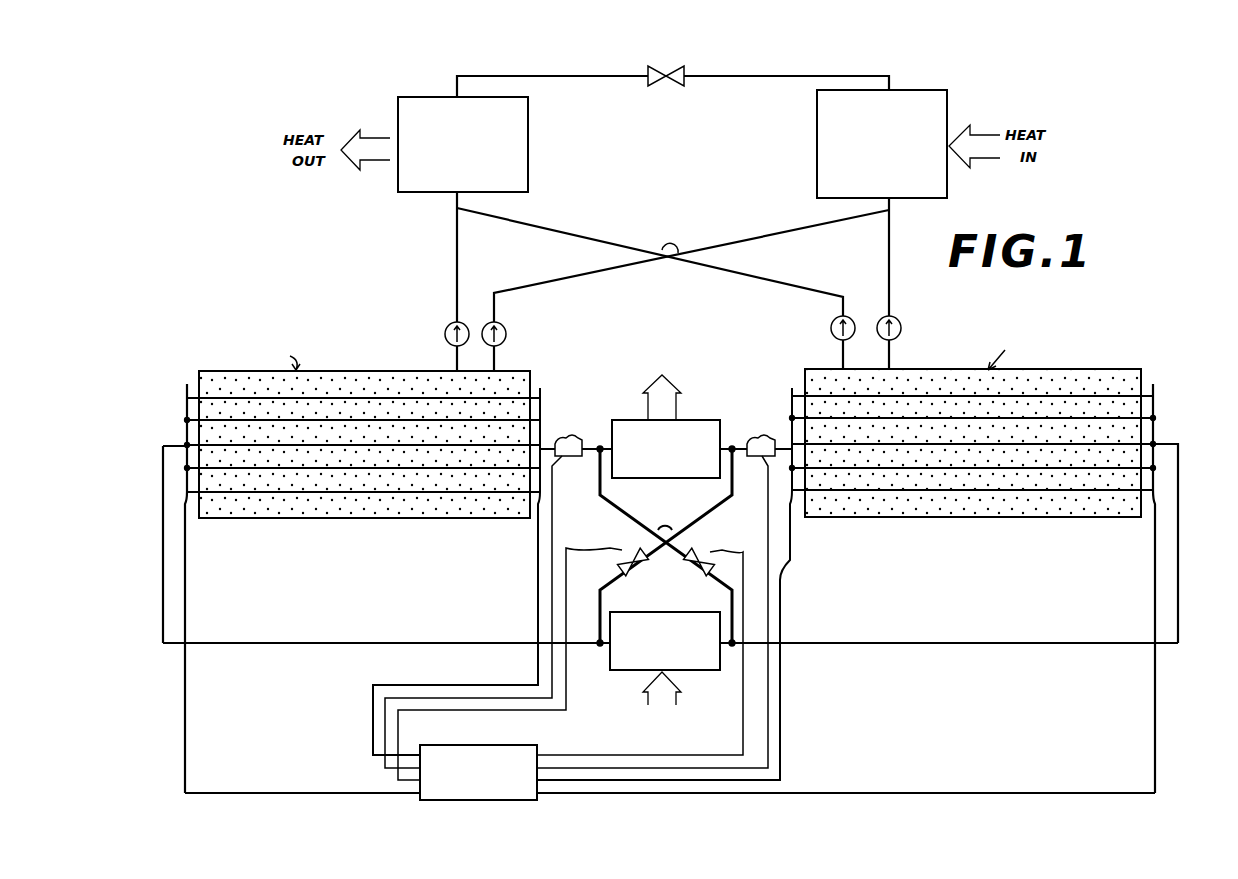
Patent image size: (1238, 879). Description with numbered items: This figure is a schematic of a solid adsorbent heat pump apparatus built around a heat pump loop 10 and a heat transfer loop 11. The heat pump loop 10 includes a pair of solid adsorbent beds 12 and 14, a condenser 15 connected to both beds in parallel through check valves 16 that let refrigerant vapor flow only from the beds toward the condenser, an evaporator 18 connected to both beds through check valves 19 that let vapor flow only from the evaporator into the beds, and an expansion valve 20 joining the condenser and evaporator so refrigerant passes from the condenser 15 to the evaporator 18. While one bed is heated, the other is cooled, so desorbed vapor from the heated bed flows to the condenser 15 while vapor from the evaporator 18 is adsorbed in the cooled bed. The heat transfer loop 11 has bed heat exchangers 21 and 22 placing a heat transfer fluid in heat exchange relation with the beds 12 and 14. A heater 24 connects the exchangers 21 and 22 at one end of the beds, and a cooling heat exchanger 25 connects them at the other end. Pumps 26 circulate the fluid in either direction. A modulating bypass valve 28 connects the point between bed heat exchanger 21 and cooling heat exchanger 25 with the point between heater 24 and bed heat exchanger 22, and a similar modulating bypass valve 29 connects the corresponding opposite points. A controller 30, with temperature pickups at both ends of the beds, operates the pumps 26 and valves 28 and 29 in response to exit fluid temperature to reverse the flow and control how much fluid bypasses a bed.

The heat pump loop 10 is at (922, 80).
The heat transfer loop 11 is at (292, 660).
The solid adsorbent bed 12 is at (348, 372).
The solid adsorbent bed 14 is at (944, 372).
The condenser 15 is at (528, 185).
The check valve 16 is at (447, 326).
The evaporator 18 is at (825, 117).
The check valve 19 is at (500, 326).
The expansion valve 20 is at (690, 60).
The bed heat exchanger 21 is at (184, 396).
The bed heat exchanger 22 is at (1158, 406).
The heater 24 is at (668, 616).
The cooling heat exchanger 25 is at (700, 420).
The pump 26 is at (560, 440).
The modulating bypass valve 28 is at (708, 554).
The modulating bypass valve 29 is at (626, 554).
The controller 30 is at (480, 748).